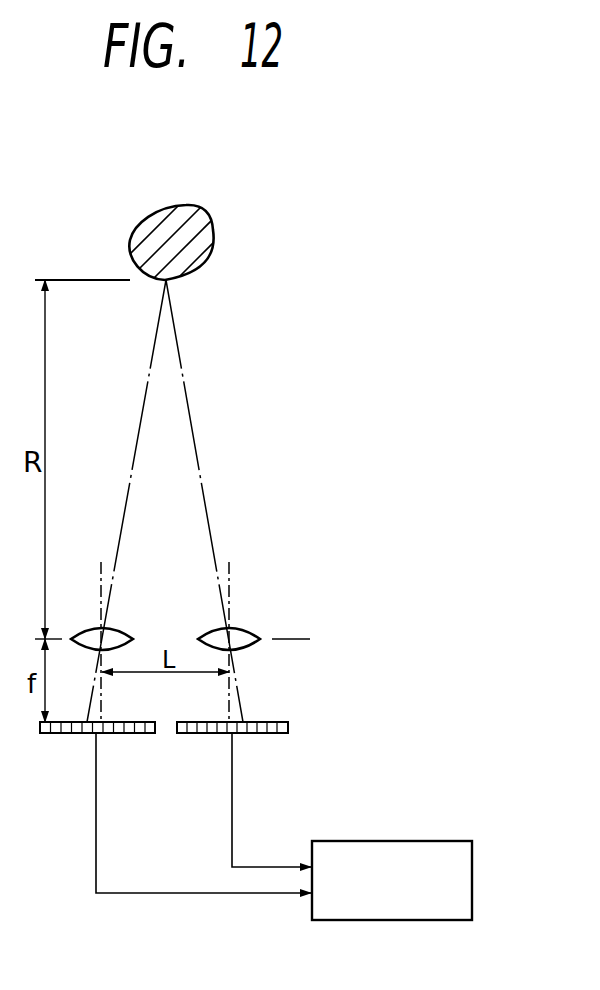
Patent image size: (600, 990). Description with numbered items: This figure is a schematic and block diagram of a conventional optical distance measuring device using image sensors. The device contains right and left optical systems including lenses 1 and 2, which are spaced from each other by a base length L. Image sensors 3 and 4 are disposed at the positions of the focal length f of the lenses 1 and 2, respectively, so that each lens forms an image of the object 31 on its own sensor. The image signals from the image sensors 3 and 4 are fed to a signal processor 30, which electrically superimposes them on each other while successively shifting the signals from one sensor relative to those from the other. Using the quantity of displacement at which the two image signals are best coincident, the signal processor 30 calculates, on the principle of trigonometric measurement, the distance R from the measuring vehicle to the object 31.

The lens 1 is at (117, 630).
The lens 2 is at (244, 630).
The image sensor 3 is at (64, 734).
The image sensor 4 is at (275, 734).
The signal processor 30 is at (437, 840).
The object 31 is at (212, 232).